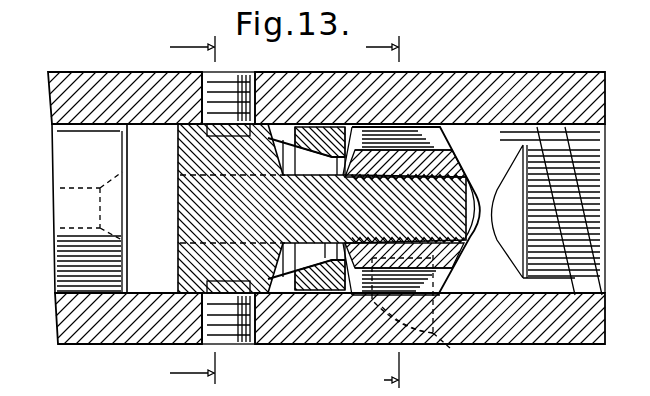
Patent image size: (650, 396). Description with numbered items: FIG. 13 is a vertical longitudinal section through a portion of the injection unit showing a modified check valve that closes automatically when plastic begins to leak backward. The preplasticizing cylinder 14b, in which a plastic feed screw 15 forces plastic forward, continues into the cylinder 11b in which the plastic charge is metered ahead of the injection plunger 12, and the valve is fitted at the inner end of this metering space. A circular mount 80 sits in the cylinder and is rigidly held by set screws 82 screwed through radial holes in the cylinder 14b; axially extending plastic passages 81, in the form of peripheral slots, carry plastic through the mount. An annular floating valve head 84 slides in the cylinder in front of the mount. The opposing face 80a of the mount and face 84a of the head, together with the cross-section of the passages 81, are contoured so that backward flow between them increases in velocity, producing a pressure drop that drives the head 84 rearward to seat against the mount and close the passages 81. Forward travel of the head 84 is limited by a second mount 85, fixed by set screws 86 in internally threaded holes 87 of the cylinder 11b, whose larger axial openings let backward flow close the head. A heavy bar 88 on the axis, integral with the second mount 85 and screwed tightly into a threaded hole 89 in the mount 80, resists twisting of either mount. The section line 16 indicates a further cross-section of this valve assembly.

The cylinder 11b is at (64, 80).
The cylinder 14b is at (566, 79).
The injection plunger 12 is at (67, 265).
The plastic feed screw 15 is at (180, 213).
The section line 16 is at (371, 214).
The circular mount 80 is at (448, 266).
The face of the mount 80a is at (356, 290).
The plastic passages 81 is at (436, 150).
The set screws 82 is at (451, 348).
The floating valve head 84 is at (318, 272).
The face of the valve head 84a is at (340, 290).
The second mount 85 is at (178, 163).
The set screws 86 is at (234, 76).
The internally threaded holes 87 is at (201, 73).
The heavy bar 88 is at (297, 185).
The threaded hole 89 is at (466, 232).